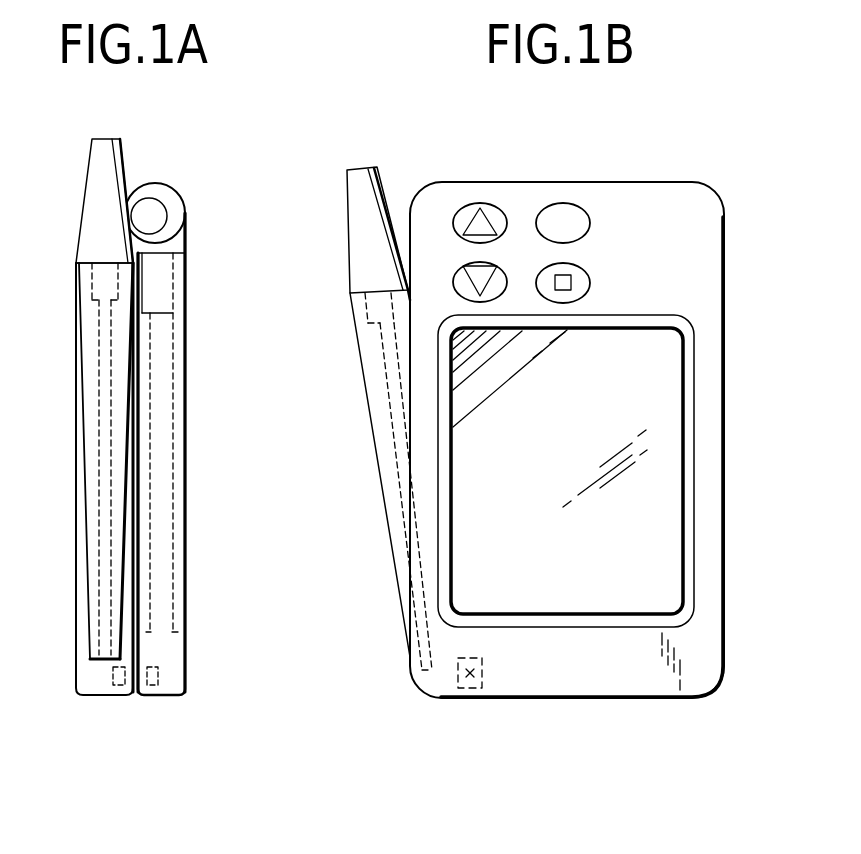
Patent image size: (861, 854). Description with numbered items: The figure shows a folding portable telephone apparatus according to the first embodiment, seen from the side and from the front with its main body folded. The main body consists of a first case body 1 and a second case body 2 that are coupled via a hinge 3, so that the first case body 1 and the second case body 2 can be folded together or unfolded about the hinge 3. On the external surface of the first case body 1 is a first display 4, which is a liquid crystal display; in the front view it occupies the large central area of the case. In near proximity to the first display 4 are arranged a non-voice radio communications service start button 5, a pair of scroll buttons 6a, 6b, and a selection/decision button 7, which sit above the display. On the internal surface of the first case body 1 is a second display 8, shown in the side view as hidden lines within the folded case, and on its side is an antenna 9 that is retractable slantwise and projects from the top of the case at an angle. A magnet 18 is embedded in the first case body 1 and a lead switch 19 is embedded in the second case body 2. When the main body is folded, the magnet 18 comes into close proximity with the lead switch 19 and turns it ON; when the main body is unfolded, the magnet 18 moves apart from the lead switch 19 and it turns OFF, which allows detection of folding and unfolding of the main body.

In FIG. 1A, the first case body 1 is at (175, 648).
In FIG. 1B, the first case body 1 is at (703, 663).
In FIG. 1A, the second case body 2 is at (86, 682).
In FIG. 1A, the hinge 3 is at (157, 218).
In FIG. 1A, the first display 4 is at (180, 460).
In FIG. 1B, the first display 4 is at (643, 476).
In FIG. 1B, the non-voice radio communications service start button 5 is at (580, 218).
In FIG. 1B, the scroll button 6a is at (488, 205).
In FIG. 1B, the scroll button 6b is at (460, 278).
In FIG. 1B, the selection/decision button 7 is at (580, 275).
In FIG. 1A, the second display 8 is at (150, 373).
In FIG. 1A, the antenna 9 is at (105, 162).
In FIG. 1B, the antenna 9 is at (368, 255).
In FIG. 1A, the magnet 18 is at (168, 699).
In FIG. 1B, the magnet 18 is at (496, 703).
In FIG. 1A, the lead switch 19 is at (104, 699).